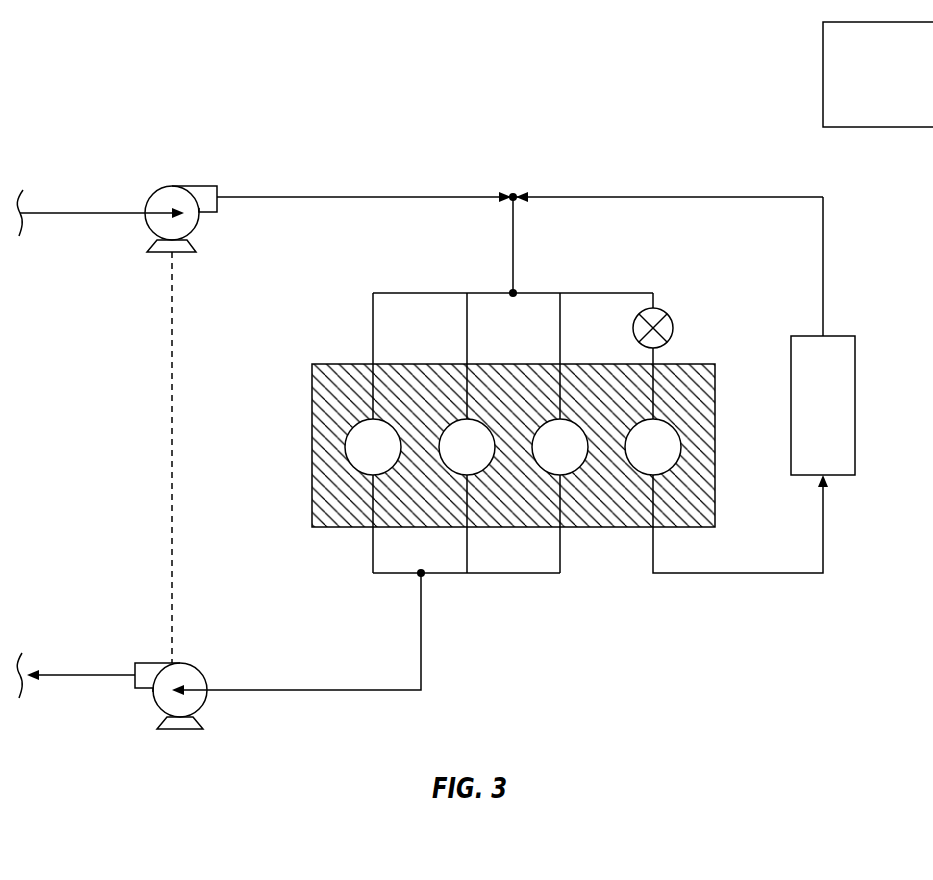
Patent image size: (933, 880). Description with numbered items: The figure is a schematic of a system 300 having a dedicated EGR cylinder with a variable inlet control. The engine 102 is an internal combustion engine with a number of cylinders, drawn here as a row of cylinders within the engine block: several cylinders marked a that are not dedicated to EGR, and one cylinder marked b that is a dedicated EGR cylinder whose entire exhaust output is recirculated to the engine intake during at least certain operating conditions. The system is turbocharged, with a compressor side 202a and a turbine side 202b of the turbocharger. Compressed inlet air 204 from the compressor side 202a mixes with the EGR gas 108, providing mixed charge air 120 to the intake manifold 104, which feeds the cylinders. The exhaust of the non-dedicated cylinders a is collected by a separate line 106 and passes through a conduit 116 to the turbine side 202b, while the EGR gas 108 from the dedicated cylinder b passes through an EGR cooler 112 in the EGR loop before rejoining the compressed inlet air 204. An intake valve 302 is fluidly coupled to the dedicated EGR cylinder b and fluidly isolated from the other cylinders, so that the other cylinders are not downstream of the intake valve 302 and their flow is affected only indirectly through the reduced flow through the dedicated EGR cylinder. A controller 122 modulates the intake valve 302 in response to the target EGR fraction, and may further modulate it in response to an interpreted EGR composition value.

The system 300 is at (154, 72).
The controller 122 is at (898, 84).
The compressor side 202a is at (196, 187).
The turbine side 202b is at (172, 729).
The compressed inlet air 204 is at (340, 197).
The mixed charge air 120 is at (513, 238).
The intake manifold 104 is at (603, 292).
The intake valve 302 is at (674, 329).
The engine 102 is at (312, 445).
The outlet manifold 106 is at (512, 576).
The return conduit 116 is at (345, 690).
The EGR gas 108 is at (763, 575).
The EGR cooler 112 is at (838, 336).